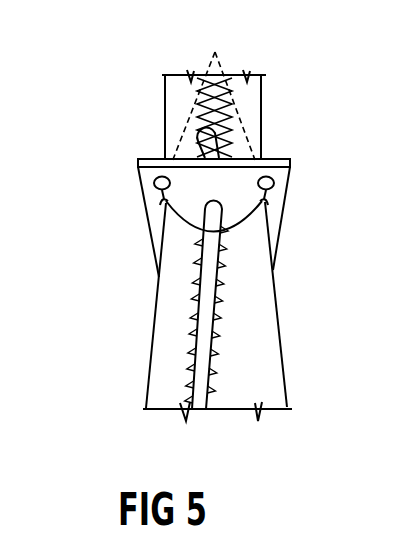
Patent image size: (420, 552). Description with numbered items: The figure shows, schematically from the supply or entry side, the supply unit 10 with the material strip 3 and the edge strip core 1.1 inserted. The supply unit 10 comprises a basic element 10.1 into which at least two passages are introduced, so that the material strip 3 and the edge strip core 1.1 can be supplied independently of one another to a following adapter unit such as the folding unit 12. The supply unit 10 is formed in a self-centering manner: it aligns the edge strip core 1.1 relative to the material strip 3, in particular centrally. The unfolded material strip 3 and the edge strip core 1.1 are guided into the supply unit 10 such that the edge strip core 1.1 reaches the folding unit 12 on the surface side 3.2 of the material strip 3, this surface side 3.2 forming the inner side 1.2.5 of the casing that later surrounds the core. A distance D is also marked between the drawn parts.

The supply unit 10 is at (283, 158).
The folding unit 12 is at (222, 62).
The edge strip core 1.1 is at (212, 323).
The basic element 10.1 is at (268, 218).
The surface side 3.2 is at (258, 283).
The inner side 1.2.5 is at (165, 303).
The material strip 3 is at (163, 365).
The distance D is at (194, 317).